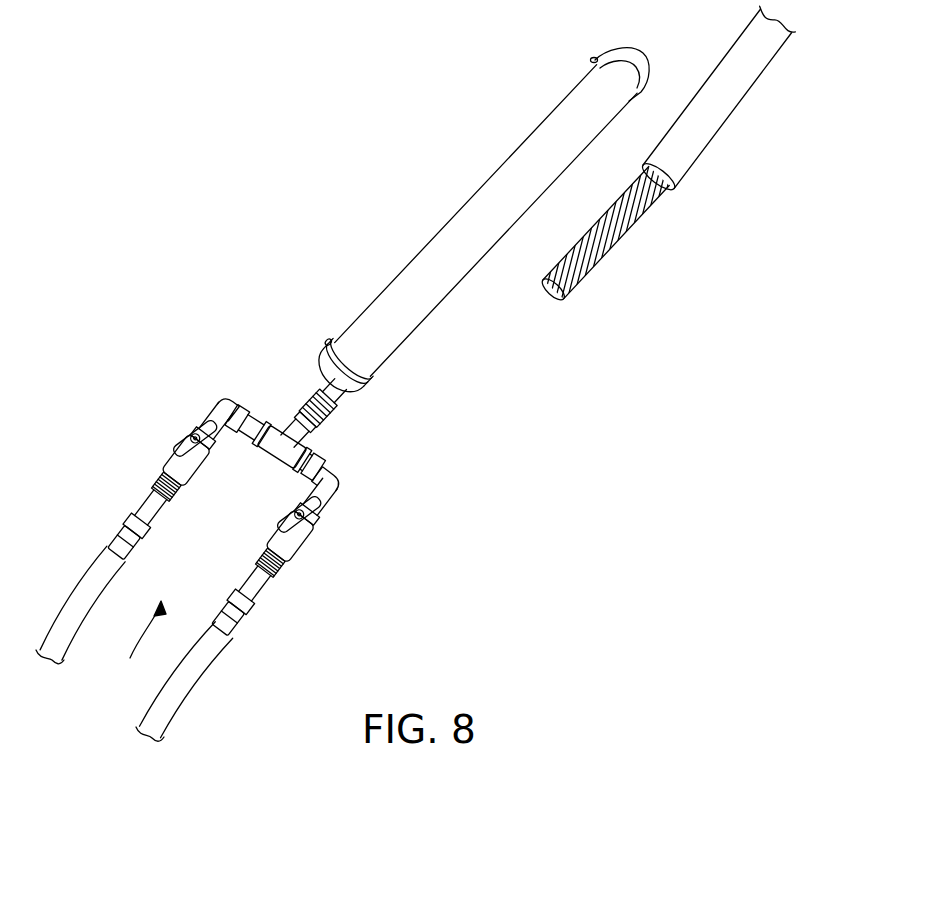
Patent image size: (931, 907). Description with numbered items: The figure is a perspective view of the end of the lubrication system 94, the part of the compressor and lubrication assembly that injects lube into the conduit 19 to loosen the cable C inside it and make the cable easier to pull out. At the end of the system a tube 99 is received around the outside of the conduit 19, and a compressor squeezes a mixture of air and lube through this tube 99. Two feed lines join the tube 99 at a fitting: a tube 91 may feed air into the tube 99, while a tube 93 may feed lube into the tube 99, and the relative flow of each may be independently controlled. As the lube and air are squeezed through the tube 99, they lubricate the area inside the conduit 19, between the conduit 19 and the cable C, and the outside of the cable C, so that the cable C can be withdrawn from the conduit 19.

The conduit 19 is at (740, 92).
The cable C is at (622, 238).
The tube 99 is at (487, 190).
The tube 91 is at (102, 568).
The tube 93 is at (280, 569).
The lubrication system 94 is at (142, 646).